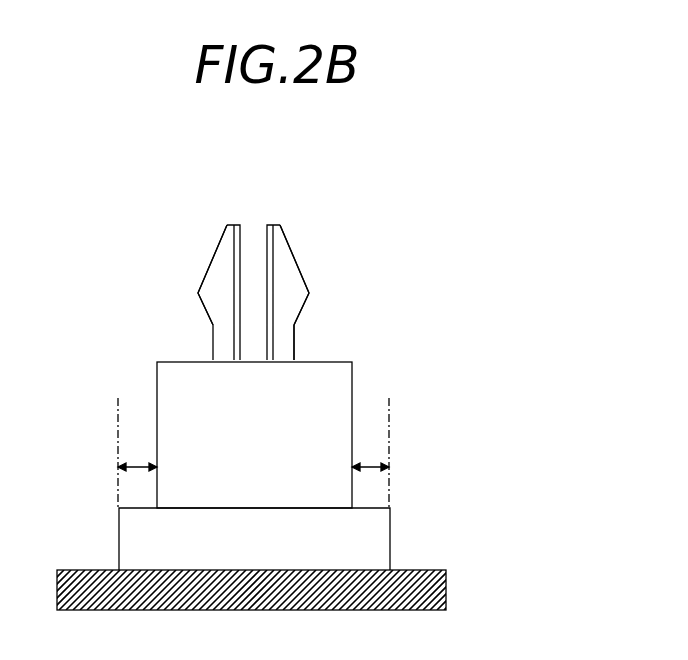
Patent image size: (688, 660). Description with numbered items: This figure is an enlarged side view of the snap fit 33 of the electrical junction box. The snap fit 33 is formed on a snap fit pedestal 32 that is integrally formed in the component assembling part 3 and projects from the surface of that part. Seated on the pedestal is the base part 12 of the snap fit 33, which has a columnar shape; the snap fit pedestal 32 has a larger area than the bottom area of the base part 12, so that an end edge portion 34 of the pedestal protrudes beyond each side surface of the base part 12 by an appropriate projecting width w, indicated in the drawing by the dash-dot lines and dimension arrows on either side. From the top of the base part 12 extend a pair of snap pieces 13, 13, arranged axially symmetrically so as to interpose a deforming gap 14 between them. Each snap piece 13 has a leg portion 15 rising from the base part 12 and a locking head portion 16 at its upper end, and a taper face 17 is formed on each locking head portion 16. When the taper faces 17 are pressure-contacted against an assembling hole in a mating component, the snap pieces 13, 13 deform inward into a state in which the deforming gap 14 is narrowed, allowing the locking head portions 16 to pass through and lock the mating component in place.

The component assembling part 3 is at (418, 570).
The snap fit pedestal 32 is at (390, 527).
The end edge portion 34 is at (137, 508).
The base part 12 is at (352, 405).
The snap piece 13 is at (200, 330).
The snap fit 33 is at (185, 248).
The deforming gap 14 is at (255, 263).
The taper face 17 is at (293, 250).
The locking head portion 16 is at (296, 288).
The leg portion 15 is at (295, 343).